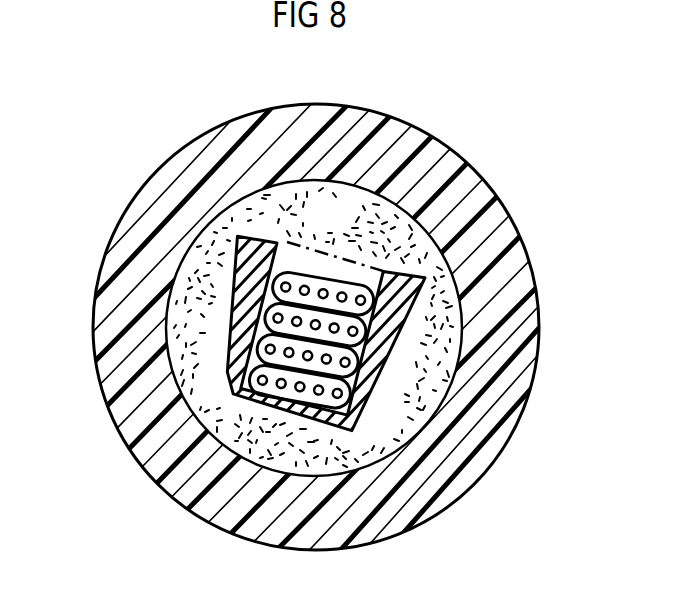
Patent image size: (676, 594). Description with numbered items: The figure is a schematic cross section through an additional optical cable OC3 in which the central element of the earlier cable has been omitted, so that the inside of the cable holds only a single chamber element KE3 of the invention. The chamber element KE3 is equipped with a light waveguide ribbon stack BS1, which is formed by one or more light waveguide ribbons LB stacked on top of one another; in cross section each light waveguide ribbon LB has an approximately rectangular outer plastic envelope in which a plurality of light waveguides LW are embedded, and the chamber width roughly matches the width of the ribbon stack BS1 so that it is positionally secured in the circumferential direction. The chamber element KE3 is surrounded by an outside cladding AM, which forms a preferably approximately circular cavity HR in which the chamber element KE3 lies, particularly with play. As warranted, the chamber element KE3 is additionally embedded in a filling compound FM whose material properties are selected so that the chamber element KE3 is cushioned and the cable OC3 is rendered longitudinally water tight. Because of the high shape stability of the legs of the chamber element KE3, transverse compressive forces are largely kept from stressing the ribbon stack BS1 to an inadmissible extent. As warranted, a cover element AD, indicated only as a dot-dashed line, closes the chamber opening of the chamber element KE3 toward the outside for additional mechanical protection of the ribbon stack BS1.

The light waveguide LW is at (291, 280).
The light waveguide ribbon stack BS1 is at (372, 272).
The light waveguide ribbon LB is at (392, 269).
The cover element AD is at (349, 208).
The chamber element KE3 is at (198, 358).
The outside cladding AM is at (500, 318).
The filling compound FM is at (420, 374).
The cavity HR is at (339, 471).
The optical cable OC3 is at (130, 478).